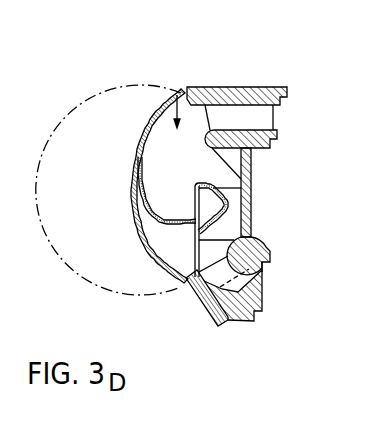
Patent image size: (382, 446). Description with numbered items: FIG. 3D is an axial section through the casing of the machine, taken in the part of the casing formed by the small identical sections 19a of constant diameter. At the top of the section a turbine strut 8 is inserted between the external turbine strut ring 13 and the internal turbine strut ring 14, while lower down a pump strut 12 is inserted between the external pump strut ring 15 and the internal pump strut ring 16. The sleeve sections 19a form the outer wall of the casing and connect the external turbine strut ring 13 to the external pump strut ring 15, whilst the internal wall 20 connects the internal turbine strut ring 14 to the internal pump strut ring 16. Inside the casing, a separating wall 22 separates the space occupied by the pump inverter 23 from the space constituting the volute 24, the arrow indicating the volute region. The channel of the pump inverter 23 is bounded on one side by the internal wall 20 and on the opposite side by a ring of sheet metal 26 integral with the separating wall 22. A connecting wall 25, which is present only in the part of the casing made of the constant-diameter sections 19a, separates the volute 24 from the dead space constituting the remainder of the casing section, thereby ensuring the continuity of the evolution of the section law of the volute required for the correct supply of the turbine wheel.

The turbine strut 8 is at (260, 118).
The pump strut 12 is at (252, 277).
The external turbine strut ring 13 is at (236, 92).
The internal turbine strut ring 14 is at (272, 146).
The external pump strut ring 15 is at (229, 316).
The internal pump strut ring 16 is at (258, 234).
The small identical sections 19a is at (133, 156).
The internal wall 20 is at (250, 176).
The separating wall 22 is at (190, 207).
The pump inverter 23 is at (226, 186).
The volute 24 is at (176, 92).
The connecting wall 25 is at (153, 226).
The ring of sheet metal 26 is at (244, 227).